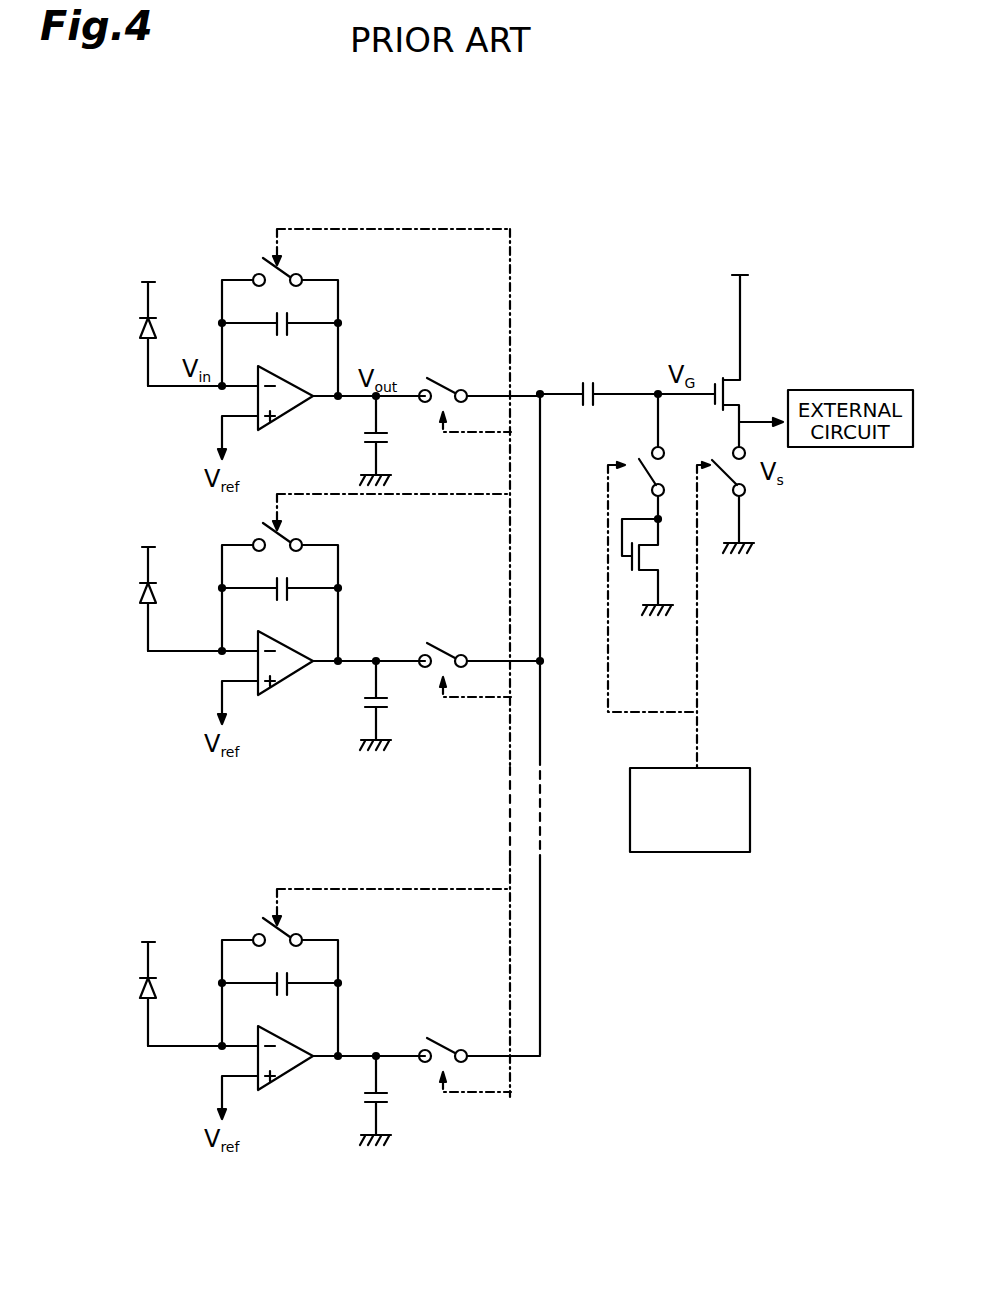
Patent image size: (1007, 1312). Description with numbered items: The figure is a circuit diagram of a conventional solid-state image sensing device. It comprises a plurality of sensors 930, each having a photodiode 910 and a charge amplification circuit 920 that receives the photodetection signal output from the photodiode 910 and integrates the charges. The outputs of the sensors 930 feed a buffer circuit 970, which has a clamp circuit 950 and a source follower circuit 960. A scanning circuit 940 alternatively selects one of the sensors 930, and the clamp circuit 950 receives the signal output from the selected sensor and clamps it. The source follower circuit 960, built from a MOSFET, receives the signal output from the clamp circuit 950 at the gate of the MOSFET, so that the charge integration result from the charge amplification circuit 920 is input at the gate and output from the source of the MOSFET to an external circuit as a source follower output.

The photodiode 910 is at (162, 326).
The charge amplification circuit 920 is at (363, 513).
The sensor 930 is at (137, 265).
The scanning circuit 940 is at (750, 803).
The clamp circuit 950 is at (670, 313).
The source follower circuit 960 is at (783, 340).
The buffer circuit 970 is at (897, 250).